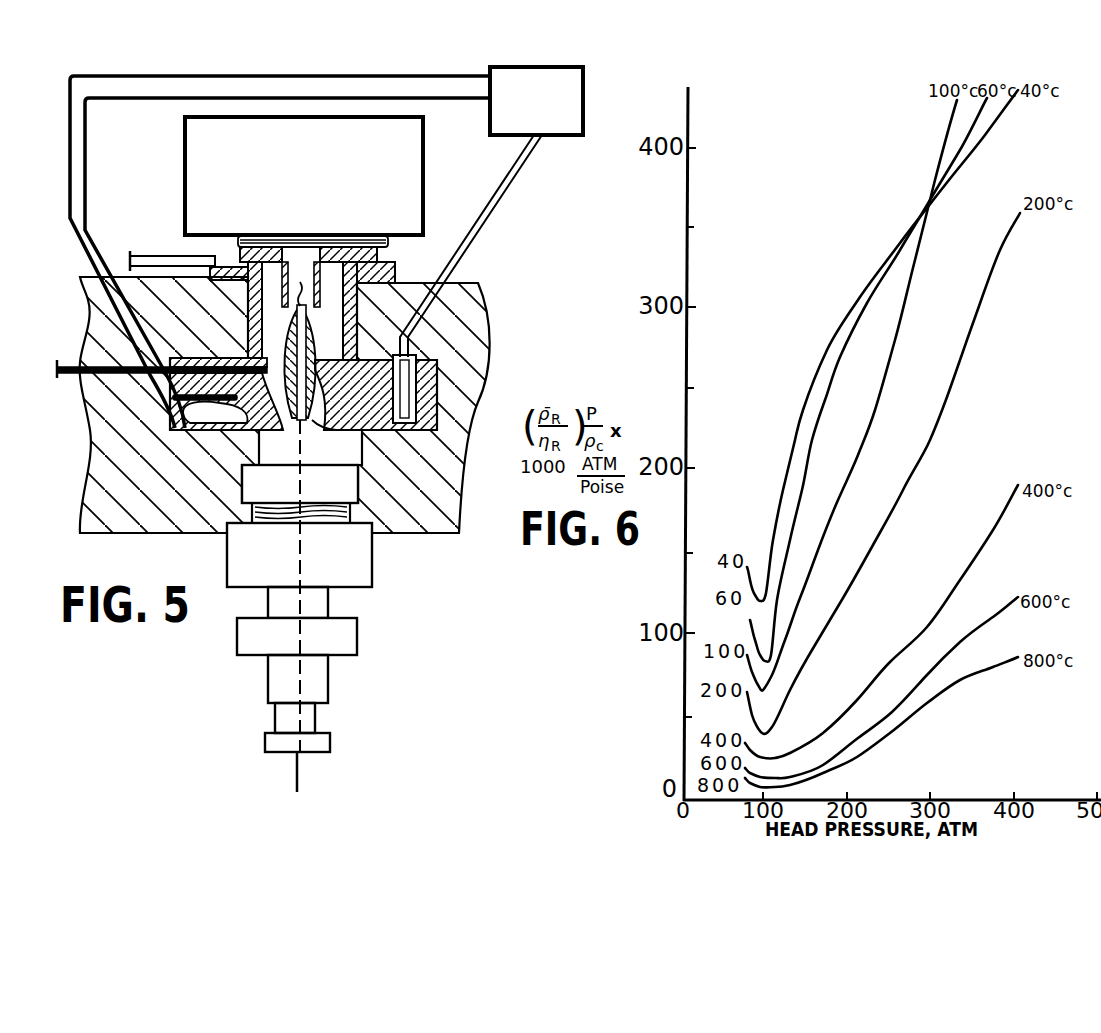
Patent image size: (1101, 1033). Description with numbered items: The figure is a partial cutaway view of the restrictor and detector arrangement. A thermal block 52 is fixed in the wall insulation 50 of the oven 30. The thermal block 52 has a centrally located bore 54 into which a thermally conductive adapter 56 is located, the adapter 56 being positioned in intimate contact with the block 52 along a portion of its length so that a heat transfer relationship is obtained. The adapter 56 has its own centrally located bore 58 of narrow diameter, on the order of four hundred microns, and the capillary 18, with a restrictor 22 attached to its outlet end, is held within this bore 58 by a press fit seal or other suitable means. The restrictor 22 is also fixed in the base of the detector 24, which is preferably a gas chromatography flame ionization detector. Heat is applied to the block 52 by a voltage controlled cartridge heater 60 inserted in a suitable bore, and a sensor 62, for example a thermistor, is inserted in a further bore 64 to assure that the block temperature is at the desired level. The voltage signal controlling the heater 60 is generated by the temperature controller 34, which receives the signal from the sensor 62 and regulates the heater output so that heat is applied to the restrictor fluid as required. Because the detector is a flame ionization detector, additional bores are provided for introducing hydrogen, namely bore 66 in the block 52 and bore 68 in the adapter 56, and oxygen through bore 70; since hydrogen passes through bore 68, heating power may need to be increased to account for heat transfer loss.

The capillary 18 is at (298, 762).
The restrictor 22 is at (304, 282).
The detector 24 is at (304, 182).
The oven 30 is at (324, 586).
The temperature controller 34 is at (326, 247).
The wall insulation 50 is at (430, 508).
The thermal block 52 is at (440, 357).
The bore 54 is at (340, 424).
The thermally conductive adapter 56 is at (322, 330).
The bore 58 is at (352, 302).
The cartridge heater 60 is at (418, 392).
The sensor 62 is at (222, 430).
The bore 64 is at (190, 428).
The bore 66 is at (113, 374).
The bore 68 is at (286, 434).
The bore 70 is at (215, 257).